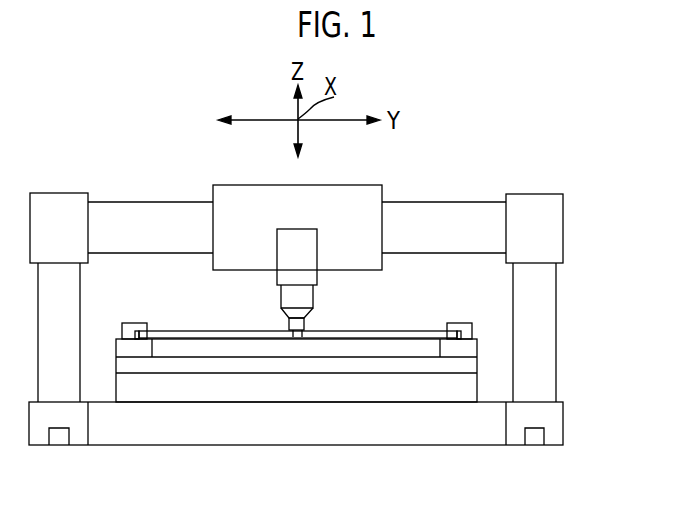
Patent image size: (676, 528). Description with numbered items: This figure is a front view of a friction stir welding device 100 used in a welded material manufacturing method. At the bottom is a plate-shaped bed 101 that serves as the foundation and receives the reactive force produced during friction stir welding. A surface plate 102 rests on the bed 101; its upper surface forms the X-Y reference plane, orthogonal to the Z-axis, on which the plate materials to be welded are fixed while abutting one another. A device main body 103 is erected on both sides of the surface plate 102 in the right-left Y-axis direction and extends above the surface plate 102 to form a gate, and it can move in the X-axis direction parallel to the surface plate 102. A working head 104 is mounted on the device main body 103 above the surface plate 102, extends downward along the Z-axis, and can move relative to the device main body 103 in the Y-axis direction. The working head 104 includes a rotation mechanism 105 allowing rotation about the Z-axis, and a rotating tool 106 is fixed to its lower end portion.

The friction stir welding device 100 is at (568, 138).
The bed 101 is at (383, 427).
The surface plate 102 is at (465, 366).
The device main body 103 is at (555, 228).
The working head 104 is at (343, 202).
The rotation mechanism 105 is at (308, 253).
The rotating tool 106 is at (270, 314).